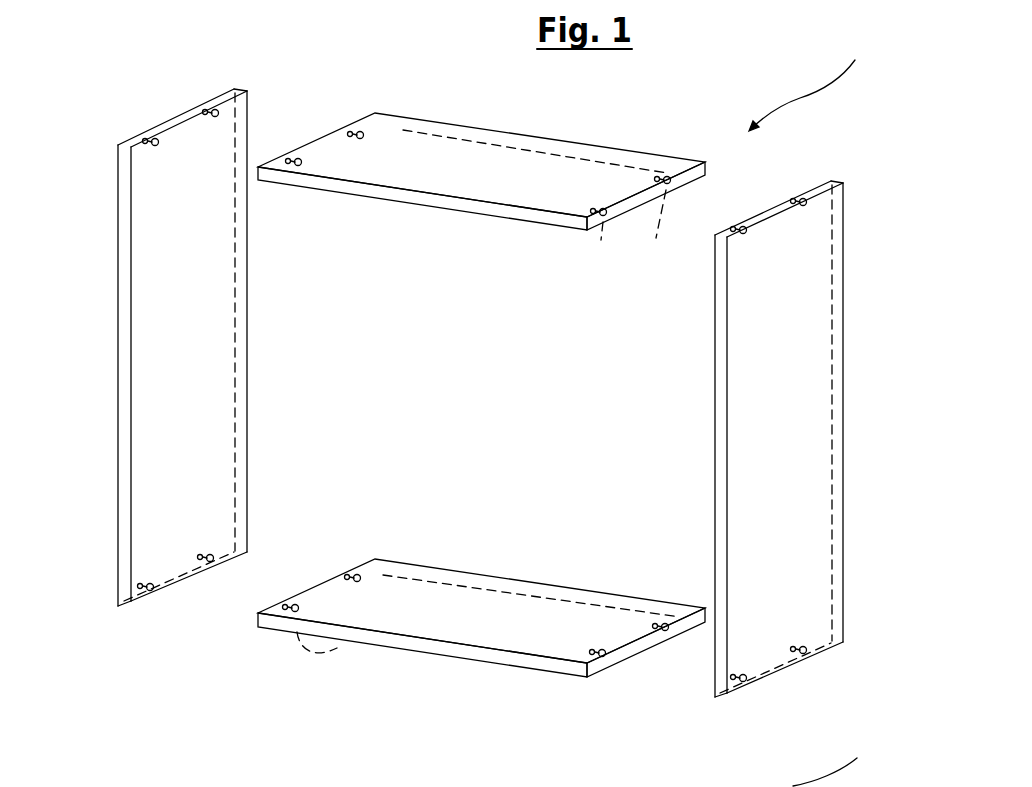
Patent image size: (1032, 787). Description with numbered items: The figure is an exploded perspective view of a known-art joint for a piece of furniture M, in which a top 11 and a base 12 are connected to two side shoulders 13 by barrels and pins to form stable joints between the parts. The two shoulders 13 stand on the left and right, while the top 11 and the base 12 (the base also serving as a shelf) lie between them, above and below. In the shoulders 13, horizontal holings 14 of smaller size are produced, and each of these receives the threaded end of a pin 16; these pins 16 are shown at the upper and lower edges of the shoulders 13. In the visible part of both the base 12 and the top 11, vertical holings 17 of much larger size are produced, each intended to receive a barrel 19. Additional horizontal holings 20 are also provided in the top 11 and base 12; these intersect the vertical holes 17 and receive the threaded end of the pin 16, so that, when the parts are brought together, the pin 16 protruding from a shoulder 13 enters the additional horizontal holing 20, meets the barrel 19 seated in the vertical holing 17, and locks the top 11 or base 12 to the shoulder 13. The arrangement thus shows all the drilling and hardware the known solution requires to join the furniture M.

The top 11 is at (491, 180).
The base 12 is at (503, 633).
The side shoulders 13 is at (199, 348).
The horizontal holings 14 is at (215, 113).
The pin 16 is at (158, 145).
The vertical holings 17 is at (298, 162).
The barrel 19 is at (297, 606).
The additional horizontal holings 20 is at (667, 198).
The piece of furniture M is at (822, 404).